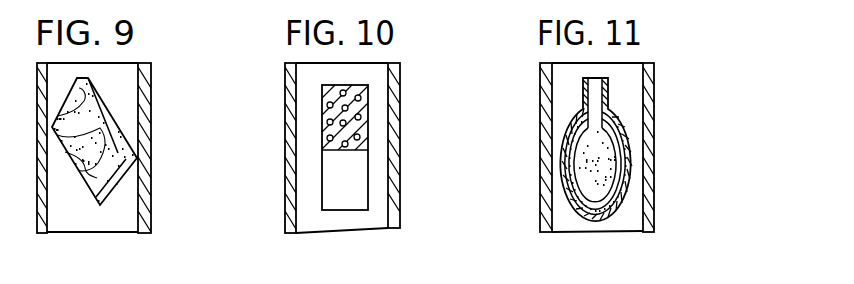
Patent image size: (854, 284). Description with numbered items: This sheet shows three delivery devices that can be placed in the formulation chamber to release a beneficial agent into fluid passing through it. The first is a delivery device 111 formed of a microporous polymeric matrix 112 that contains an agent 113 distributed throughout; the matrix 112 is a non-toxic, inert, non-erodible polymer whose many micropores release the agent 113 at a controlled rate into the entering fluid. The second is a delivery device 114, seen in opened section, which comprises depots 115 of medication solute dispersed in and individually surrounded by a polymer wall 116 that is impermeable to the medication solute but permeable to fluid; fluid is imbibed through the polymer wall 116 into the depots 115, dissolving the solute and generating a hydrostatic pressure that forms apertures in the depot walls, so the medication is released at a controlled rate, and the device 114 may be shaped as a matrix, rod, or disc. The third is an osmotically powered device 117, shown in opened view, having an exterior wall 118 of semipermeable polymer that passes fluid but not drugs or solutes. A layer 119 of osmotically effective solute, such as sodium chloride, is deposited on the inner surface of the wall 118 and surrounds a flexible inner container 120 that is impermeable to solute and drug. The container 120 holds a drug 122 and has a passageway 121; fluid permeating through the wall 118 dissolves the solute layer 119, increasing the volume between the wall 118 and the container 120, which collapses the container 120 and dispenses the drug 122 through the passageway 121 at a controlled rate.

In FIG. 9, the delivery device 111 is at (120, 95).
In FIG. 9, the microporous polymeric matrix 112 is at (117, 123).
In FIG. 9, the agent 113 is at (118, 155).
In FIG. 10, the delivery device 114 is at (375, 88).
In FIG. 10, the depots of medication solute 115 is at (358, 118).
In FIG. 10, the polymer wall 116 is at (365, 138).
In FIG. 11, the device 117 is at (622, 97).
In FIG. 11, the exterior wall 118 is at (627, 147).
In FIG. 11, the layer of osmotically effective solute 119 is at (625, 167).
In FIG. 11, the inner container 120 is at (622, 187).
In FIG. 11, the passageway 121 is at (597, 82).
In FIG. 11, the drug 122 is at (598, 145).